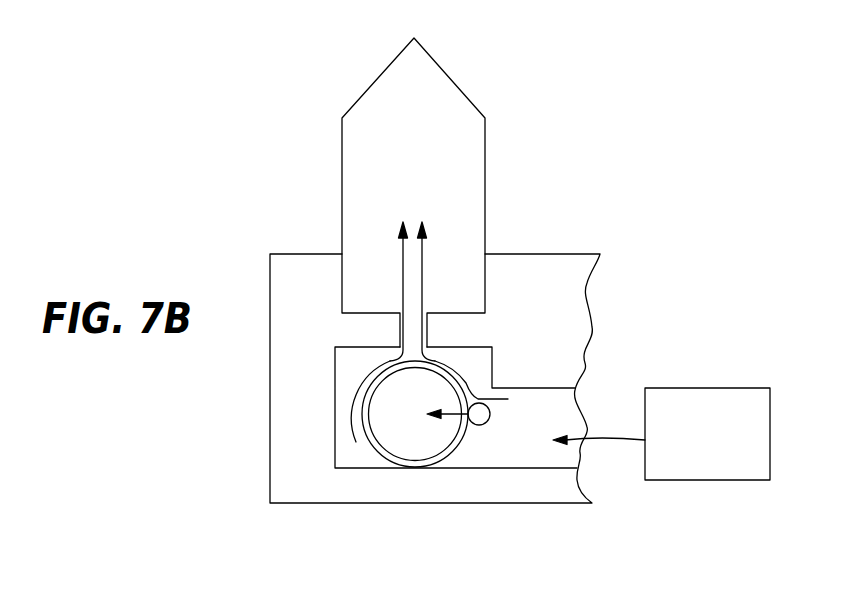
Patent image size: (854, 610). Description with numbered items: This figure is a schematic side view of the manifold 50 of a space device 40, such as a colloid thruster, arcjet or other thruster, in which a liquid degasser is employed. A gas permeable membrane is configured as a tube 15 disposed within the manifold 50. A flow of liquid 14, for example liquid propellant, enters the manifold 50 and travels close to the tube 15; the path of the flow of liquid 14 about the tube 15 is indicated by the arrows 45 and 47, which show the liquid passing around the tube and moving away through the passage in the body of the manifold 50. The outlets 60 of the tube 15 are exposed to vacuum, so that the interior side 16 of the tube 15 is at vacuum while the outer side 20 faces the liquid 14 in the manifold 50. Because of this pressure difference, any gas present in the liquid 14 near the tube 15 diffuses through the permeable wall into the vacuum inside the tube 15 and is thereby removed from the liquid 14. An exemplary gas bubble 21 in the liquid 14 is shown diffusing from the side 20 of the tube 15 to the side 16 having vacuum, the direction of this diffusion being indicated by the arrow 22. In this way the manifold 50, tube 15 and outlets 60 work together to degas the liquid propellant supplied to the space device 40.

The liquid 14 is at (718, 387).
The tube 15 is at (412, 466).
The side of tube 16 is at (368, 420).
The side of tube 20 is at (335, 425).
The gas bubble 21 is at (490, 413).
The arrow 22 is at (453, 418).
The space device 40 is at (277, 122).
The arrow 45 is at (403, 255).
The arrow 47 is at (423, 253).
The manifold 50 is at (269, 477).
The outlets 60 is at (495, 358).